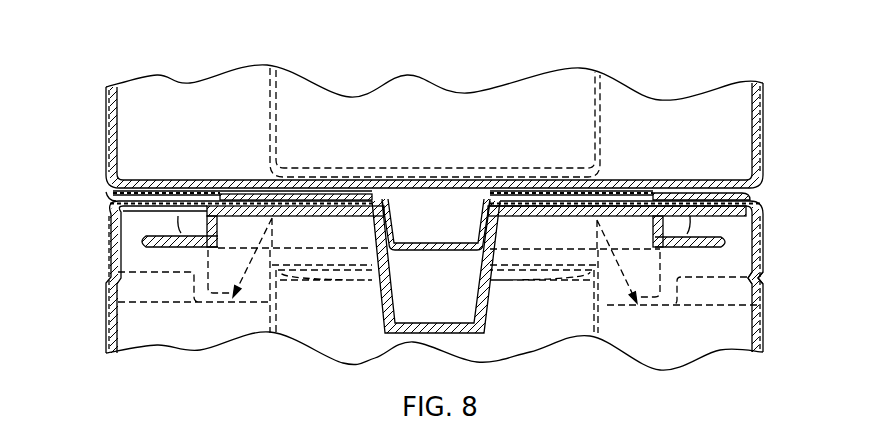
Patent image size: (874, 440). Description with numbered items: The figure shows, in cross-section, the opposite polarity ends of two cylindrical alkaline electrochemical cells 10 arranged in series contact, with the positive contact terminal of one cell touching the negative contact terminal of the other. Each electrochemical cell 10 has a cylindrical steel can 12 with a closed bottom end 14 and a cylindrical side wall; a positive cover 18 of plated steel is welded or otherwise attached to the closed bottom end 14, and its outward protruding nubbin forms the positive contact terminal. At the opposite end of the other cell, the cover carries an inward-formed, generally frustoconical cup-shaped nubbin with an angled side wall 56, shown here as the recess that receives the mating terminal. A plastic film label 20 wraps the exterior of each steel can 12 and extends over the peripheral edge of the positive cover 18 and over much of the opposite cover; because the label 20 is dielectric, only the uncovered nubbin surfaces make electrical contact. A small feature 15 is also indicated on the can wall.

The electrochemical cell 10 is at (781, 165).
The steel can 12 is at (765, 96).
The closed bottom end 14 is at (397, 184).
The wall notch 15 is at (764, 281).
The positive cover 18 is at (440, 254).
The plastic film label 20 is at (108, 189).
The angled side wall 56 is at (395, 274).